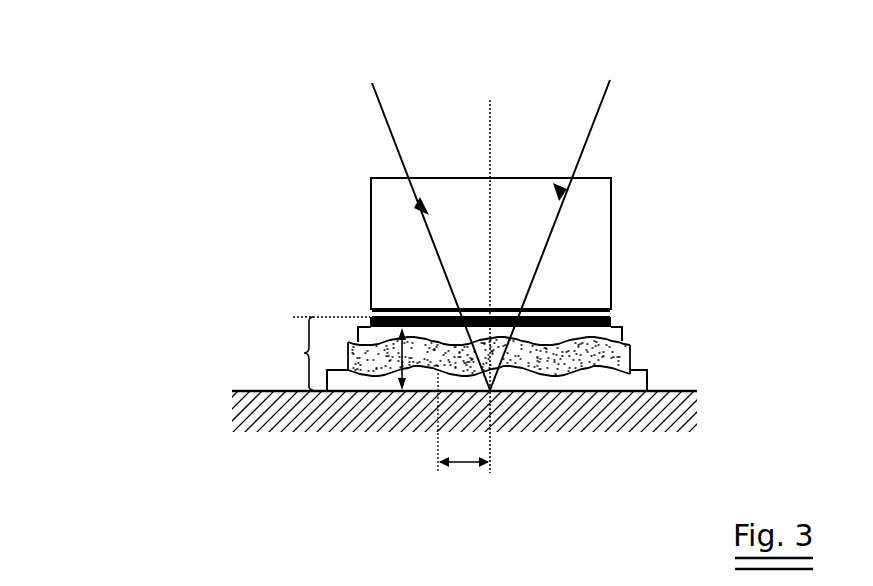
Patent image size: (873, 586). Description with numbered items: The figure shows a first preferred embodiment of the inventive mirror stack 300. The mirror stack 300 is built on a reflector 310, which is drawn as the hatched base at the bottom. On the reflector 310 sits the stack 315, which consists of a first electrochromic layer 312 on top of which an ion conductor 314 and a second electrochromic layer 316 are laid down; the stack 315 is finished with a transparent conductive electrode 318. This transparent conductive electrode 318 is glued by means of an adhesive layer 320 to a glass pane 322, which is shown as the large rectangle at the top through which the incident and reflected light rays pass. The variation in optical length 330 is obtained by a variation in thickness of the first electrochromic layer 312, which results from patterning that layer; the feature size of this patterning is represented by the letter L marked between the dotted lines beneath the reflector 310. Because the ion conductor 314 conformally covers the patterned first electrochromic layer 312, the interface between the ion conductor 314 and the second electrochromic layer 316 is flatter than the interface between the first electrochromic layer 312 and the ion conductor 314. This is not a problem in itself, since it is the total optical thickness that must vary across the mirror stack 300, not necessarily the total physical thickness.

The mirror stack 300 is at (165, 70).
The reflector 310 is at (243, 390).
The first electrochromic layer 312 is at (643, 373).
The ion conductor 314 is at (625, 355).
The stack 315 is at (307, 353).
The second electrochromic layer 316 is at (613, 335).
The transparent conductive electrode 318 is at (604, 312).
The adhesive layer 320 is at (378, 314).
The glass pane 322 is at (586, 276).
The variation in optical length 330 is at (403, 356).